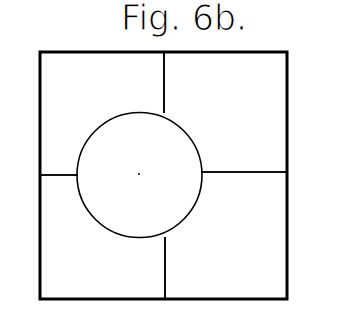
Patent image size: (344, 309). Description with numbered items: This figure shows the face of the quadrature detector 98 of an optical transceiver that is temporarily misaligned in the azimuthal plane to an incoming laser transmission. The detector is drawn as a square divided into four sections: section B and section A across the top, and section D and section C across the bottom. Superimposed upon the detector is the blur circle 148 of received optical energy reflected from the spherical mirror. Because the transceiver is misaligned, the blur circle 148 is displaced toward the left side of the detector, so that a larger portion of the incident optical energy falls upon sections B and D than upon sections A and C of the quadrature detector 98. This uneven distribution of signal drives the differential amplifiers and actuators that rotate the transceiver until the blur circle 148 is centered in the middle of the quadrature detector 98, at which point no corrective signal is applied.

The quadrature detector 98 is at (181, 175).
The blur circle 148 is at (107, 230).
The section A is at (225, 112).
The section B is at (102, 113).
The section C is at (226, 235).
The section D is at (102, 237).